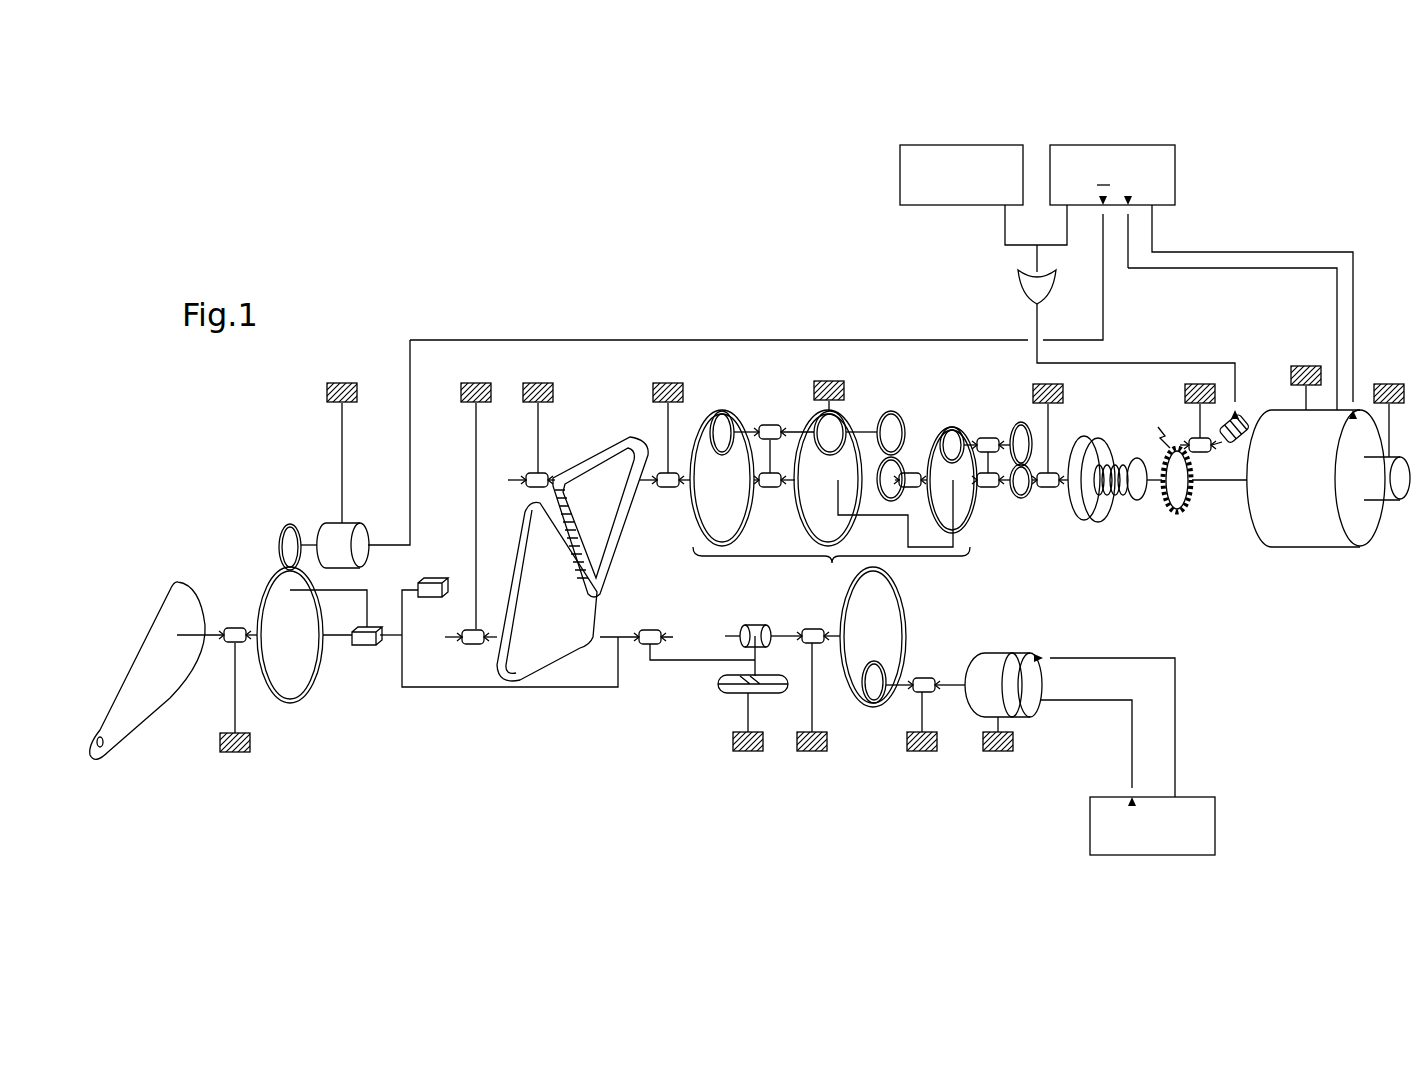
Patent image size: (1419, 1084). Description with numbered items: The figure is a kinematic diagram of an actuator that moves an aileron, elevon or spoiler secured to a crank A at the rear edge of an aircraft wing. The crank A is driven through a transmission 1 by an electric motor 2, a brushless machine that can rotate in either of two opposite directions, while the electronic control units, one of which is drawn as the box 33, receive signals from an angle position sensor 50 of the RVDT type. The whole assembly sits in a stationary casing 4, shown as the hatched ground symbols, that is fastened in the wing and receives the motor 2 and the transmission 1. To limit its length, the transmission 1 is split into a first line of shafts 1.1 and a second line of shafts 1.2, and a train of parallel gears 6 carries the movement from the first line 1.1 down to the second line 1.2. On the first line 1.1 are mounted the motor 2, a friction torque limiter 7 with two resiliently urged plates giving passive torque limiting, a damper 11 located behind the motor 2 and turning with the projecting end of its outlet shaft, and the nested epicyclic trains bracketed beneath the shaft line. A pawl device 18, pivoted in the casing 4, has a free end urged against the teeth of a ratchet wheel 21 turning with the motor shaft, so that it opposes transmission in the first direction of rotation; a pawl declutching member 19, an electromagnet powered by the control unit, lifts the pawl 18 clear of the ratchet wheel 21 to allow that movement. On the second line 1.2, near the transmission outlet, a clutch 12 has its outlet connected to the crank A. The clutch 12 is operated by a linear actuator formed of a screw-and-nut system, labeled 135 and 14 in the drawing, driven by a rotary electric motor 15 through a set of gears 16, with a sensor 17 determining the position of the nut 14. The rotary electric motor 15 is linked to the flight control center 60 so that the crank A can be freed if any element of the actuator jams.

The transmission 1 is at (479, 300).
The first line of shafts 1.1 is at (730, 390).
The second line of shafts 1.2 is at (446, 716).
The electric motor 2 is at (1287, 488).
The casing 4 is at (537, 383).
The train of parallel gears 6 is at (586, 460).
The torque limiter 7 is at (1090, 523).
The damper 11 is at (1376, 492).
The clutch 12 is at (383, 615).
The nut 14 is at (753, 626).
The rotary electric motor 15 is at (990, 658).
The set of gears 16 is at (868, 707).
The sensor 17 is at (1025, 653).
The pawl device 18 is at (1173, 443).
The pawl declutching member 19 is at (1240, 400).
The ratchet wheel 21 is at (1177, 512).
The control unit 33 is at (950, 186).
The angle position sensor 50 is at (333, 537).
The flight control center 60 is at (1138, 838).
The brake 135 is at (788, 628).
The crank A is at (130, 717).